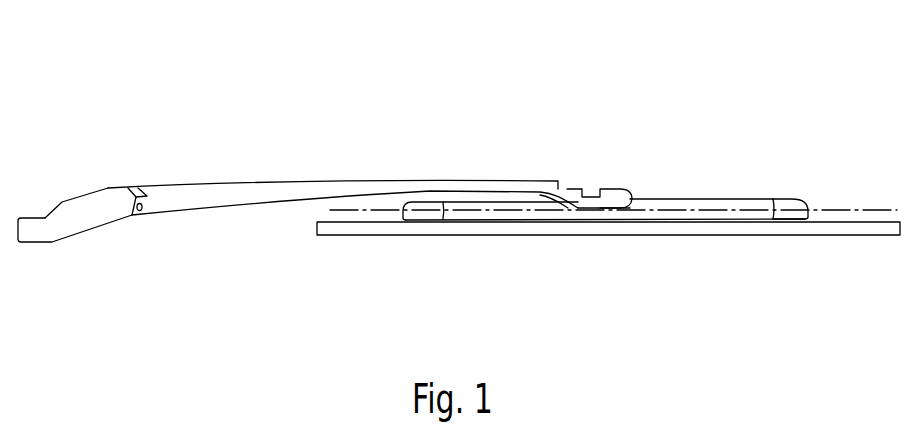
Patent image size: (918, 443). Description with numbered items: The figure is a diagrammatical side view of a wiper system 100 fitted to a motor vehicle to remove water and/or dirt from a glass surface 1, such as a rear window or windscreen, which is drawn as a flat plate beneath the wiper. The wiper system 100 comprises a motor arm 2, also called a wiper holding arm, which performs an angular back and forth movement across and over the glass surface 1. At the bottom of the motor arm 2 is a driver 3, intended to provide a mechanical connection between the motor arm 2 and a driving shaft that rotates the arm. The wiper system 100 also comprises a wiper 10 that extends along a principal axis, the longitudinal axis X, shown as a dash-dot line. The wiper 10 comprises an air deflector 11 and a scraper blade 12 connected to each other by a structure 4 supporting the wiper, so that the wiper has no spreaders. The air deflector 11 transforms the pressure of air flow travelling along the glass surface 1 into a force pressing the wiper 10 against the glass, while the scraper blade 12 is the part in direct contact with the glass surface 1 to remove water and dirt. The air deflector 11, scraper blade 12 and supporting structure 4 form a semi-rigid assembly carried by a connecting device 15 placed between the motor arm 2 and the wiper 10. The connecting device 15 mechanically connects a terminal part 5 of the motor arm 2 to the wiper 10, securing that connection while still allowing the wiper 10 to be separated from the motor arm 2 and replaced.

The glass surface 1 is at (852, 235).
The motor arm 2 is at (241, 176).
The driver 3 is at (75, 210).
The structure 4 is at (488, 212).
The terminal part 5 is at (607, 188).
The wiper 10 is at (700, 192).
The air deflector 11 is at (752, 200).
The scraper blade 12 is at (717, 219).
The connecting device 15 is at (605, 214).
The wiper system 100 is at (413, 188).
The longitudinal axis X is at (872, 209).